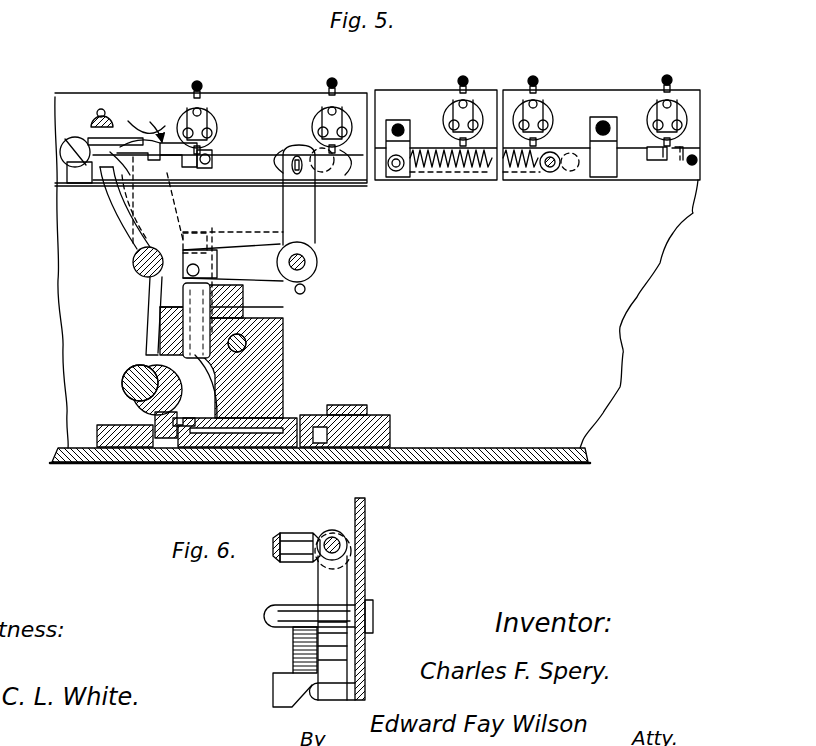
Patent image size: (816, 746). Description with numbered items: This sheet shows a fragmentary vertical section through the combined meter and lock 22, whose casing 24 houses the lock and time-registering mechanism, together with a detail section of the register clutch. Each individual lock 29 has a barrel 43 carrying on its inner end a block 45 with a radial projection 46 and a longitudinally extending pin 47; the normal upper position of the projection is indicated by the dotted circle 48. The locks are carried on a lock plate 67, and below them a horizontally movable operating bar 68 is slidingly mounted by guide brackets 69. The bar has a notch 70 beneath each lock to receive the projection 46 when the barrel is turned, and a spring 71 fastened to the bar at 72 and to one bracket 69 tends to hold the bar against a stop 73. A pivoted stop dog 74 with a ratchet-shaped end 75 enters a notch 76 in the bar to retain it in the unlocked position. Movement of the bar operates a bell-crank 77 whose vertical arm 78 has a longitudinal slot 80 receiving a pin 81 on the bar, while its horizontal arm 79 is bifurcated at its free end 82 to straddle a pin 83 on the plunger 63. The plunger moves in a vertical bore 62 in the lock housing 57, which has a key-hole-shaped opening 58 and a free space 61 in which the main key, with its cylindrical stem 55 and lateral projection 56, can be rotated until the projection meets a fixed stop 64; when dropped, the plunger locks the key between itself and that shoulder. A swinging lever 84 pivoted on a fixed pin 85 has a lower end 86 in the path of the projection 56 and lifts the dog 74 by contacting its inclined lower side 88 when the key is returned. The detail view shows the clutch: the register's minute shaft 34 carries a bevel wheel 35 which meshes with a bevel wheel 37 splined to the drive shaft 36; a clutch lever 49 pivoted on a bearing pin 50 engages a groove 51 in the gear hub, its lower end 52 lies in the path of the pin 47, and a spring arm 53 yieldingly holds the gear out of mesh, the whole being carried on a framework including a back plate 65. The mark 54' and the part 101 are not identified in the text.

In FIG. 5, the combined meter and lock 22 is at (598, 432).
In FIG. 5, the casing 24 is at (622, 368).
In FIG. 5, the individual lock 29 is at (215, 135).
In FIG. 5, the lock barrel 43 is at (348, 113).
In FIG. 5, the block 45 is at (214, 128).
In FIG. 5, the radial projection 46 is at (205, 112).
In FIG. 5, the pin 47 is at (194, 86).
In FIG. 5, the dotted circle 48 is at (152, 117).
In FIG. 5, the lock plate 67 is at (86, 168).
In FIG. 5, the operating bar 68 is at (240, 175).
In FIG. 5, the guide brackets 69 is at (410, 130).
In FIG. 5, the notch 70 is at (190, 167).
In FIG. 5, the spring 71 is at (443, 172).
In FIG. 5, the spring attachment point 72 is at (552, 175).
In FIG. 5, the stop 73 is at (83, 158).
In FIG. 5, the stop dog 74 is at (98, 118).
In FIG. 5, the ratchet shaped end 75 is at (133, 133).
In FIG. 5, the notch 76 is at (117, 138).
In FIG. 5, the bell-crank 77 is at (322, 266).
In FIG. 5, the vertical arm 78 is at (320, 236).
In FIG. 5, the horizontal arm 79 is at (250, 255).
In FIG. 5, the longitudinal slot 80 is at (269, 148).
In FIG. 5, the pin 81 is at (296, 153).
In FIG. 5, the bifurcated free end 82 is at (187, 240).
In FIG. 5, the pin 83 is at (185, 275).
In FIG. 5, the swinging lever 84 is at (113, 232).
In FIG. 5, the fixed pin 85 is at (134, 265).
In FIG. 5, the lower end of lever 86 is at (150, 332).
In FIG. 5, the inclined lower side 88 is at (150, 165).
In FIG. 5, the lateral projection 56 is at (136, 326).
In FIG. 5, the lock housing 57 is at (284, 362).
In FIG. 5, the opening 58 is at (138, 442).
In FIG. 5, the free space 61 is at (208, 420).
In FIG. 5, the vertical bore 62 is at (268, 328).
In FIG. 5, the plunger 63 is at (224, 303).
In FIG. 5, the fixed stop 64 is at (147, 353).
In FIG. 5, the ball 54' is at (120, 381).
In FIG. 5, the cylindrical stem 55 is at (135, 392).
In FIG. 5, the support block 101 is at (301, 418).
In FIG. 6, the horizontal shaft 34 is at (276, 542).
In FIG. 6, the bevel wheel 35 is at (314, 540).
In FIG. 6, the longitudinal shaft 36 is at (365, 538).
In FIG. 6, the bevel wheel 37 is at (357, 500).
In FIG. 6, the clutch lever 49 is at (337, 586).
In FIG. 6, the bearing pin 50 is at (290, 615).
In FIG. 6, the groove 51 is at (332, 530).
In FIG. 6, the lower end of lever 52 is at (292, 648).
In FIG. 6, the spring arm 53 is at (350, 629).
In FIG. 6, the back plate 65 is at (362, 674).